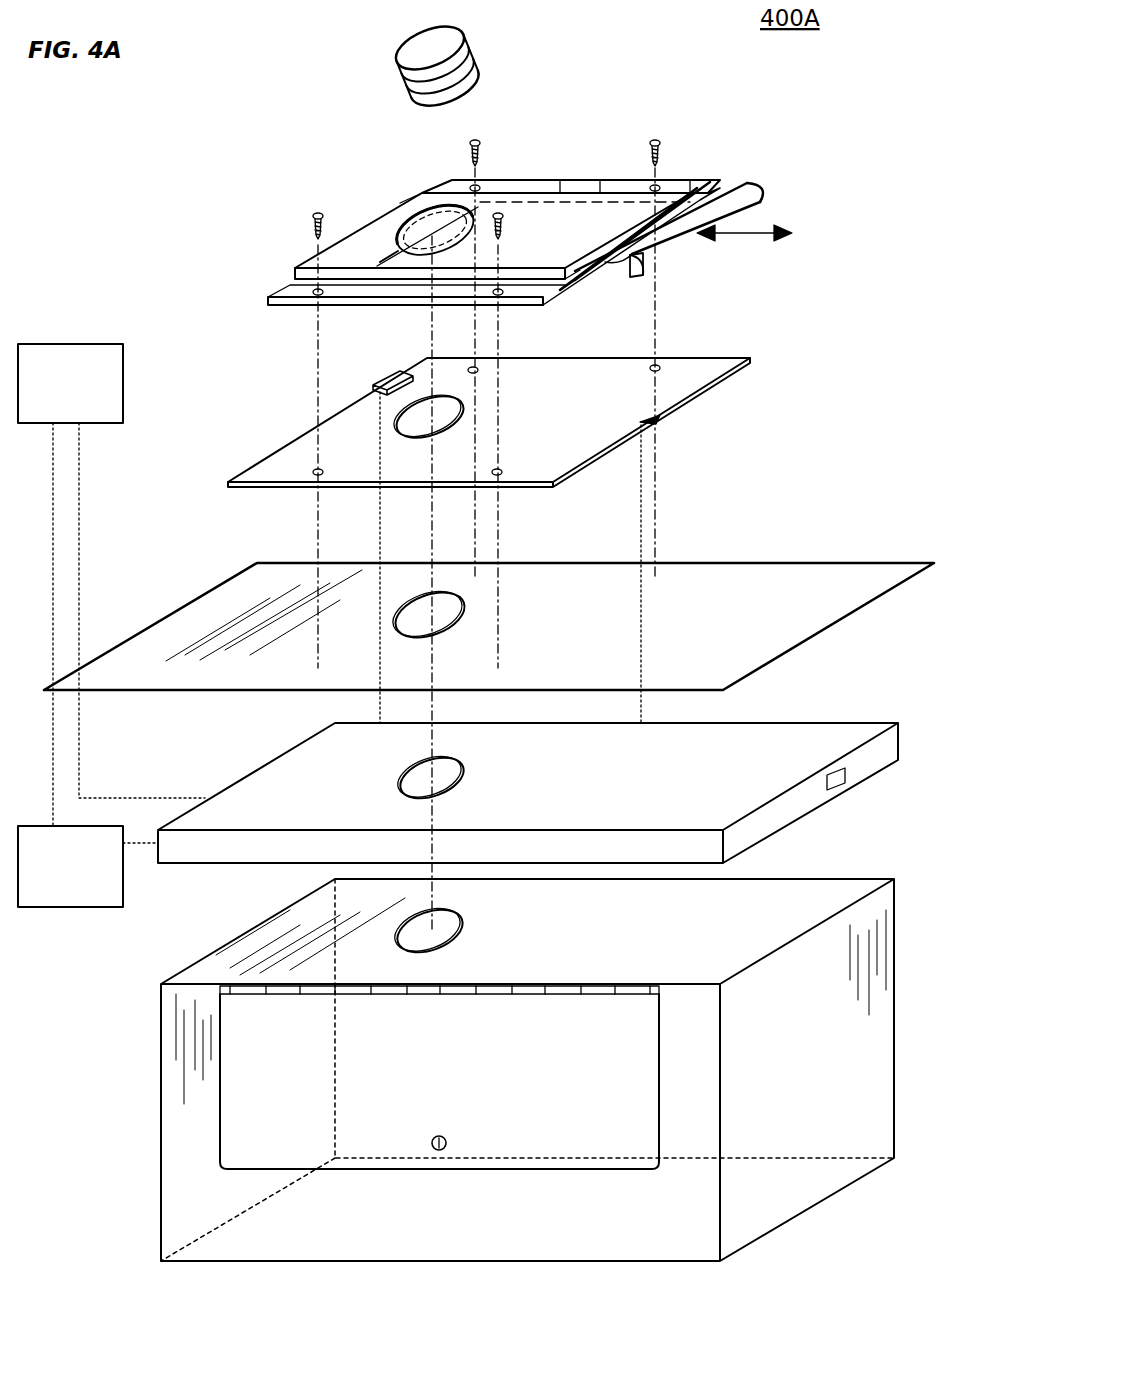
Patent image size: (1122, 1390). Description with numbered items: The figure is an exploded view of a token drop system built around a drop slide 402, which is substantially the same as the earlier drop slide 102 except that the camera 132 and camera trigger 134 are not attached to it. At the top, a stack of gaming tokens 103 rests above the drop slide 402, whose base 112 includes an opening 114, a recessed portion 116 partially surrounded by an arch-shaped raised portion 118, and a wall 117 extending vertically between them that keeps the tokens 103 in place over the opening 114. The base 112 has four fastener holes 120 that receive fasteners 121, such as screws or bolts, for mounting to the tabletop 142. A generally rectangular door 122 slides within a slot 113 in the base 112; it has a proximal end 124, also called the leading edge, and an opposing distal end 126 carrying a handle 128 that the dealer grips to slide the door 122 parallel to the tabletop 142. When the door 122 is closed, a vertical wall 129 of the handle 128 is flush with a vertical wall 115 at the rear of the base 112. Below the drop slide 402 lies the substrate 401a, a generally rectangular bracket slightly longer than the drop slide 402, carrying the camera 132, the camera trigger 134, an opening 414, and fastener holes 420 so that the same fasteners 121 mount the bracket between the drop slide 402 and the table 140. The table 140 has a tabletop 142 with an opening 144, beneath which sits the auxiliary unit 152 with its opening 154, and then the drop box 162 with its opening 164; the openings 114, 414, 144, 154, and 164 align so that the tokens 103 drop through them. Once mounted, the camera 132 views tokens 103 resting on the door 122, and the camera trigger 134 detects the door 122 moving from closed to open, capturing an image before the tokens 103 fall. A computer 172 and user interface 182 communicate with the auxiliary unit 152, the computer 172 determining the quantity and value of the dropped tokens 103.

The drop slide 402 is at (580, 82).
The tokens 103 is at (372, 32).
The base 112 is at (565, 182).
The slot 113 is at (578, 275).
The opening 114 is at (468, 206).
The vertical wall 115 is at (642, 262).
The recessed portion 116 is at (383, 227).
The wall 117 is at (522, 180).
The raised portion 118 is at (436, 209).
The fastener holes 120 is at (482, 186).
The fasteners 121 is at (481, 148).
The door 122 is at (597, 181).
The proximal end 124 is at (390, 254).
The distal end 126 is at (762, 210).
The handle 128 is at (756, 190).
The vertical wall 129 is at (628, 266).
The drop slide 102 is at (585, 206).
The camera 132 is at (372, 380).
The camera trigger 134 is at (660, 415).
The substrate 401a is at (310, 440).
The opening 414 is at (445, 421).
The fastener holes 420 is at (470, 368).
The table 140 is at (868, 543).
The tabletop 142 is at (775, 578).
The opening 144 is at (446, 612).
The auxiliary unit 152 is at (845, 727).
The opening 154 is at (446, 778).
The drop box 162 is at (845, 882).
The opening 164 is at (446, 931).
The user interface 182 is at (111, 585).
The computer 172 is at (88, 866).